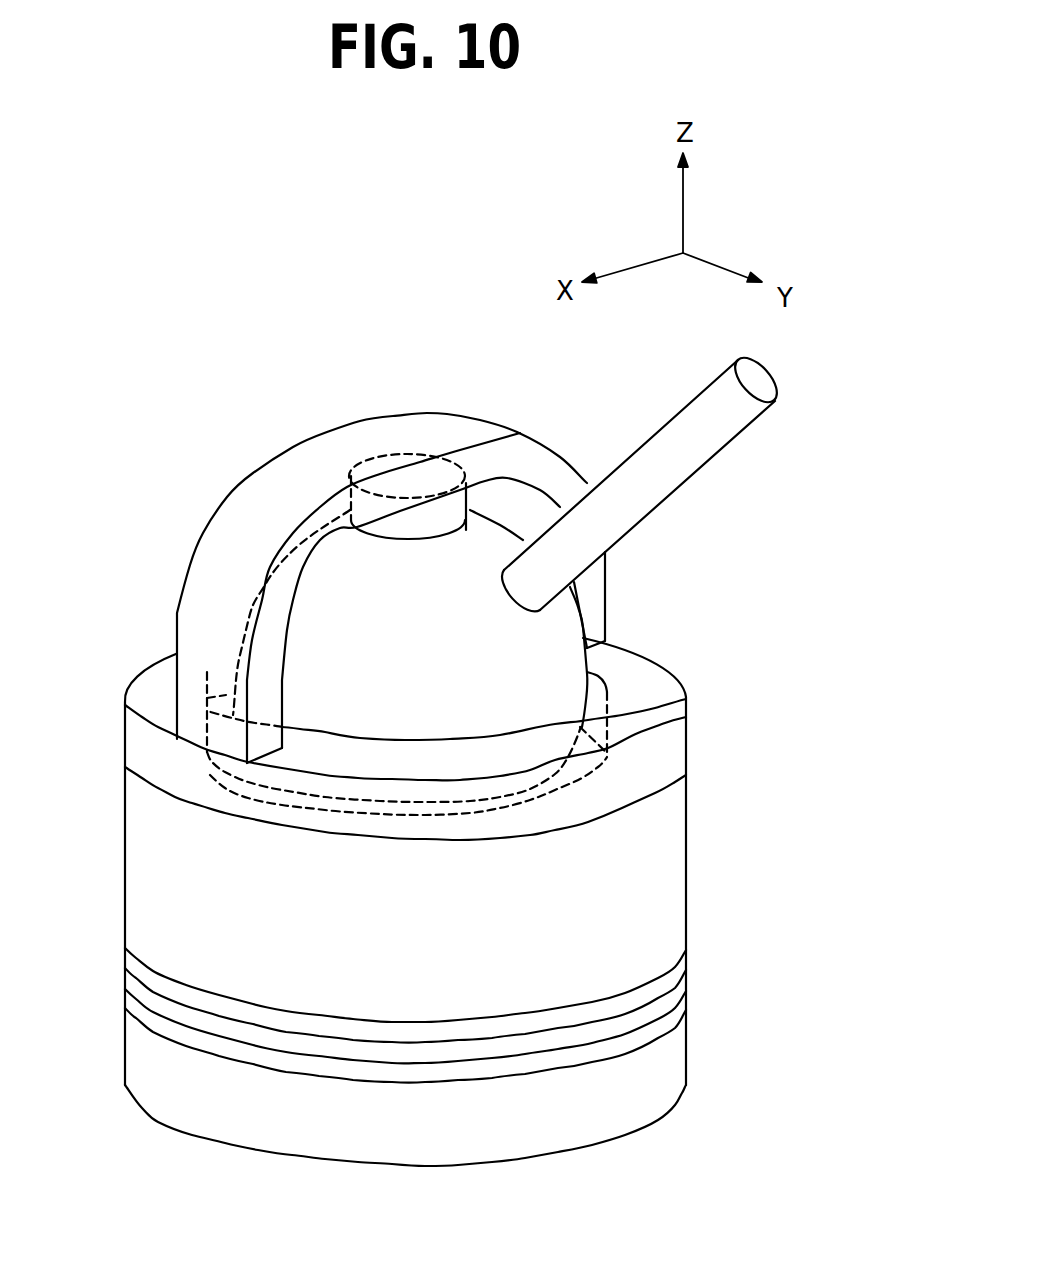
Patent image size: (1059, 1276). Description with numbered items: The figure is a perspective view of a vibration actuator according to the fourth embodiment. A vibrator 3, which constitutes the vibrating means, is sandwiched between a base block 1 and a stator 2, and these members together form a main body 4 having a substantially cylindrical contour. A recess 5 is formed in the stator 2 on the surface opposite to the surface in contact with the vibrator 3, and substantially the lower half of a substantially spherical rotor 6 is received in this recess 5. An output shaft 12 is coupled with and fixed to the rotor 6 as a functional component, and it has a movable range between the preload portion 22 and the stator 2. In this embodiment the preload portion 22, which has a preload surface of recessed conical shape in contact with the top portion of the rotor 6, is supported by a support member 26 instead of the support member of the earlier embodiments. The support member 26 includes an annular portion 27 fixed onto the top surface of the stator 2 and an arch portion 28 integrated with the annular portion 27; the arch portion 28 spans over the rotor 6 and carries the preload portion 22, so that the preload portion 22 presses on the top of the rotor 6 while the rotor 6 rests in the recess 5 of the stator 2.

The base block 1 is at (688, 1062).
The stator 2 is at (688, 880).
The vibrator 3 is at (688, 980).
The main body 4 is at (460, 931).
The recess 5 is at (292, 790).
The rotor 6 is at (577, 618).
The output shaft 12 is at (707, 468).
The preload portion 22 is at (412, 540).
The support member 26 is at (324, 588).
The annular portion 27 is at (689, 736).
The arch portion 28 is at (206, 532).